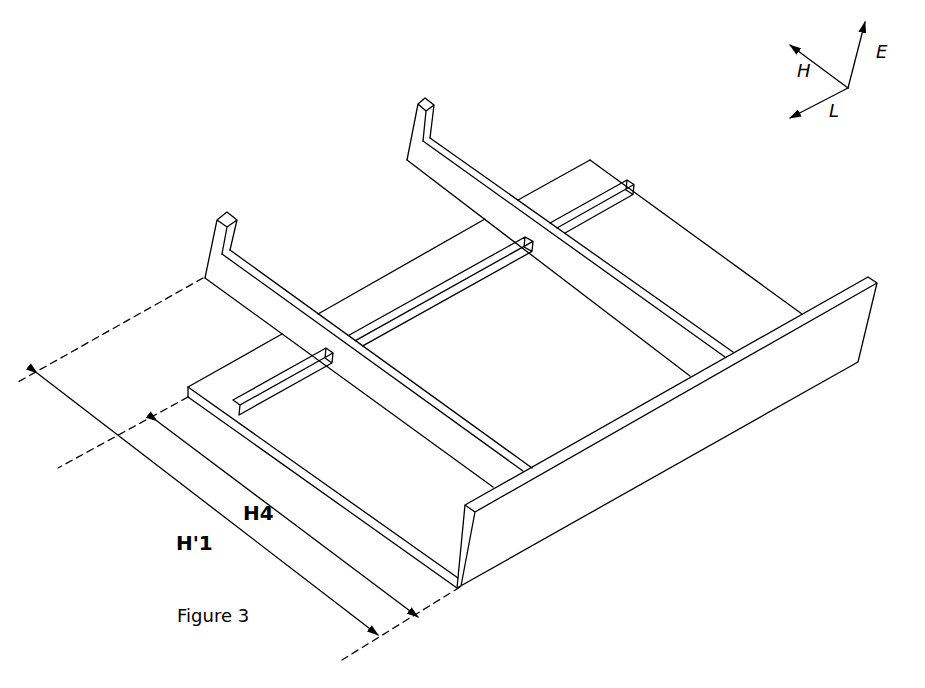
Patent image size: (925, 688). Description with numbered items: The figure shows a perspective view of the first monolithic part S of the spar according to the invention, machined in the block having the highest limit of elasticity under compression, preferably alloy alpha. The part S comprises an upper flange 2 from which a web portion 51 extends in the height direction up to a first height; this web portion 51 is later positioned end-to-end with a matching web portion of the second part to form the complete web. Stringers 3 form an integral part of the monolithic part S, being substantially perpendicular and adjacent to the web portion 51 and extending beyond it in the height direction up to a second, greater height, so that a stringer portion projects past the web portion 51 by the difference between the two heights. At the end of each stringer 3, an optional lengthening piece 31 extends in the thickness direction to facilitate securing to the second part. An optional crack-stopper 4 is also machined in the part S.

The upper flange 2 is at (787, 333).
The stringers 3 is at (585, 253).
The lengthening piece 31 is at (424, 98).
The crack-stopper 4 is at (268, 380).
The web portion 51 is at (485, 333).
The first monolithic part S is at (372, 164).